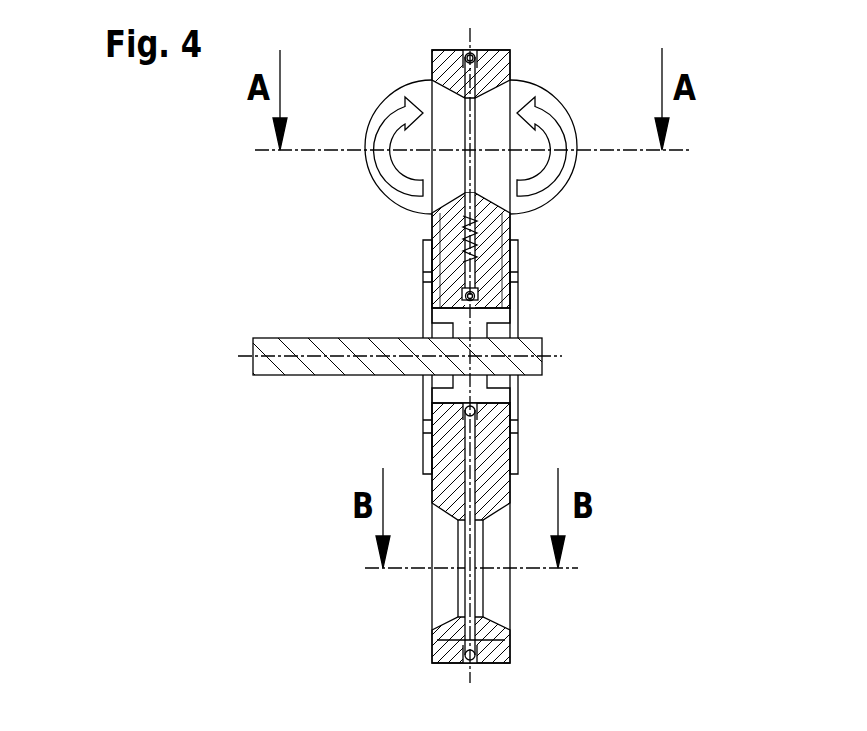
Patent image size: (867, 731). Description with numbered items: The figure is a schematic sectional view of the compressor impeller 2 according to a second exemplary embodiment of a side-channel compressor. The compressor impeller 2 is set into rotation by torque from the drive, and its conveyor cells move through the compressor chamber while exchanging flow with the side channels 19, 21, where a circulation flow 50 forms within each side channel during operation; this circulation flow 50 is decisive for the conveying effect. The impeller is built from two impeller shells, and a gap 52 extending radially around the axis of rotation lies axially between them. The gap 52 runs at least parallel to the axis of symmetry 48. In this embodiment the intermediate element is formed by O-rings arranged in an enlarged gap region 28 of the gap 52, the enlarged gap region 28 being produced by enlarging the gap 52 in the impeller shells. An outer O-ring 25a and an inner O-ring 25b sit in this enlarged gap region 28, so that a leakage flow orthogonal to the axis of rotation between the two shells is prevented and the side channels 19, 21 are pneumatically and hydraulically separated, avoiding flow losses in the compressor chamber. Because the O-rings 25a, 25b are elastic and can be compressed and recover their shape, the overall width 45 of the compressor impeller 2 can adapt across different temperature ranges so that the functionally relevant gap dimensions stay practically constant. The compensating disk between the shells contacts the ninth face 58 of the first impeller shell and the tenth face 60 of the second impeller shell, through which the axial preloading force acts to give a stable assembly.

The compressor impeller 2 is at (166, 156).
The side channel 19 is at (388, 110).
The side channel 21 is at (557, 108).
The outer O-ring 25a is at (464, 48).
The inner O-ring 25b is at (466, 301).
The enlarged gap region 28 is at (489, 63).
The overall width 45 is at (452, 628).
The axis of symmetry 48 is at (470, 672).
The circulation flow 50 is at (378, 184).
The gap 52 is at (478, 265).
The ninth face 58 is at (462, 217).
The tenth face 60 is at (488, 262).